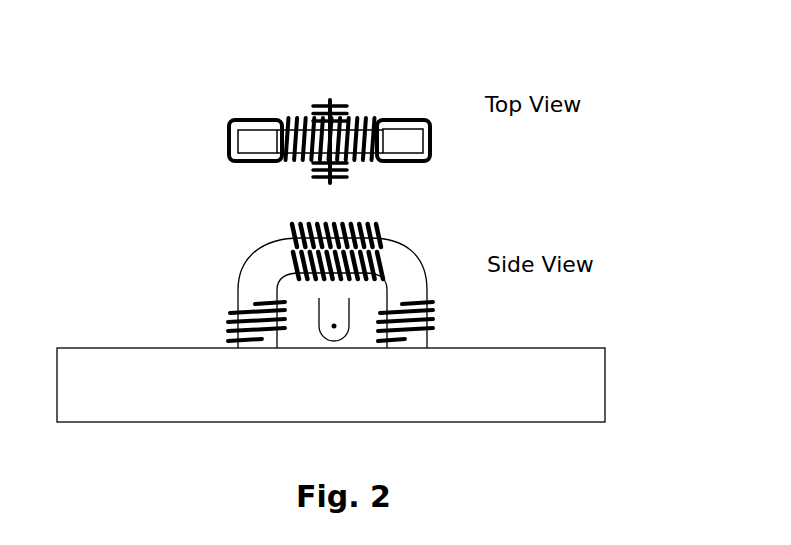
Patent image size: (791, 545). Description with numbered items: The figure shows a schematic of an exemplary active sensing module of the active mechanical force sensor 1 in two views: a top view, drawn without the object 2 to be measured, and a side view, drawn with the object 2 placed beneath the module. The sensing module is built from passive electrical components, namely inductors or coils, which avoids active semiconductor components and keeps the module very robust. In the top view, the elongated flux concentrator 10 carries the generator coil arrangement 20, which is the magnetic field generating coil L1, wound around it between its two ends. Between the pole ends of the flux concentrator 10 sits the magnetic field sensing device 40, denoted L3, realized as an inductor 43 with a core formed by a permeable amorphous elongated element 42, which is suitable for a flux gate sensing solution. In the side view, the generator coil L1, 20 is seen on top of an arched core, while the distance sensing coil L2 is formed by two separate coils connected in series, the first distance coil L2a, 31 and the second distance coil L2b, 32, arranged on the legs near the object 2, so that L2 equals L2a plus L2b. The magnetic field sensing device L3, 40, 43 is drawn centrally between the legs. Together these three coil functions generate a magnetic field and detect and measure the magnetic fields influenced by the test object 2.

The active mechanical force sensor 1 is at (455, 236).
The object 2 is at (573, 360).
The flux concentrator 10 is at (415, 140).
The generator coil arrangement 20 is at (288, 120).
The first distance coil 31 is at (410, 121).
The second distance coil 32 is at (232, 126).
The magnetic field sensing device 40 is at (349, 289).
The permeable amorphous elongated element 42 is at (330, 100).
The inductor 43 is at (346, 176).
The magnetic field generating coil L1 is at (294, 228).
The distance sensing coil L2 is at (233, 308).
The first distance coil L2a is at (212, 321).
The second distance coil L2b is at (450, 321).
The magnetic field sensing device L3 is at (334, 331).